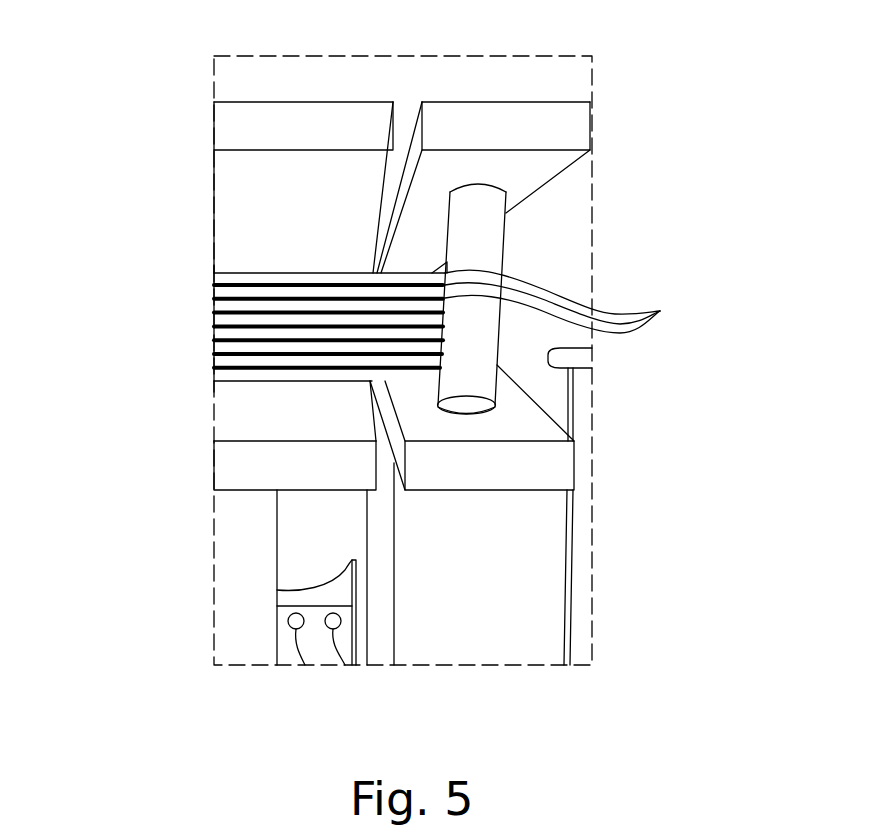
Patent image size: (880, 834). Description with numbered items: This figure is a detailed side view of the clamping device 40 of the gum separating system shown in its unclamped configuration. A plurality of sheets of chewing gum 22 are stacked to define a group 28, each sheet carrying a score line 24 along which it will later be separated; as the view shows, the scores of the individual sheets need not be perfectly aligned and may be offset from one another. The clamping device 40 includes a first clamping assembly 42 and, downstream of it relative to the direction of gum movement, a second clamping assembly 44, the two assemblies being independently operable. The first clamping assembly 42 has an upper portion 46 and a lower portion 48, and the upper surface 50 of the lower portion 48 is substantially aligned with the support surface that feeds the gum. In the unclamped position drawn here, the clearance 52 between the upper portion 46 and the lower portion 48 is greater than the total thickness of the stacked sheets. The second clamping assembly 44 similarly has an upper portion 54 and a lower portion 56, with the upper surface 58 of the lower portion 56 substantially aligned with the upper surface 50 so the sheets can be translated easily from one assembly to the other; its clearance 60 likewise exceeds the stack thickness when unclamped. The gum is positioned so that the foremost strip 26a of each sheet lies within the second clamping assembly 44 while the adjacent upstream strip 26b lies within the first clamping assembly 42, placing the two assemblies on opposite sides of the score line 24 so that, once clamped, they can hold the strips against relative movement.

The chewing gum 22 is at (208, 273).
The score line 24 is at (370, 271).
The foremost strip 26a is at (578, 301).
The adjacent upstream strip 26b is at (272, 273).
The group 28 is at (89, 267).
The clamping device 40 is at (657, 95).
The first clamping assembly 42 is at (204, 134).
The second clamping assembly 44 is at (598, 135).
The upper portion 46 is at (215, 122).
The lower portion 48 is at (237, 467).
The upper surface 50 is at (243, 413).
The clearance 52 is at (215, 182).
The upper portion 54 is at (522, 118).
The lower portion 56 is at (547, 463).
The upper surface 58 is at (518, 420).
The clearance 60 is at (513, 195).